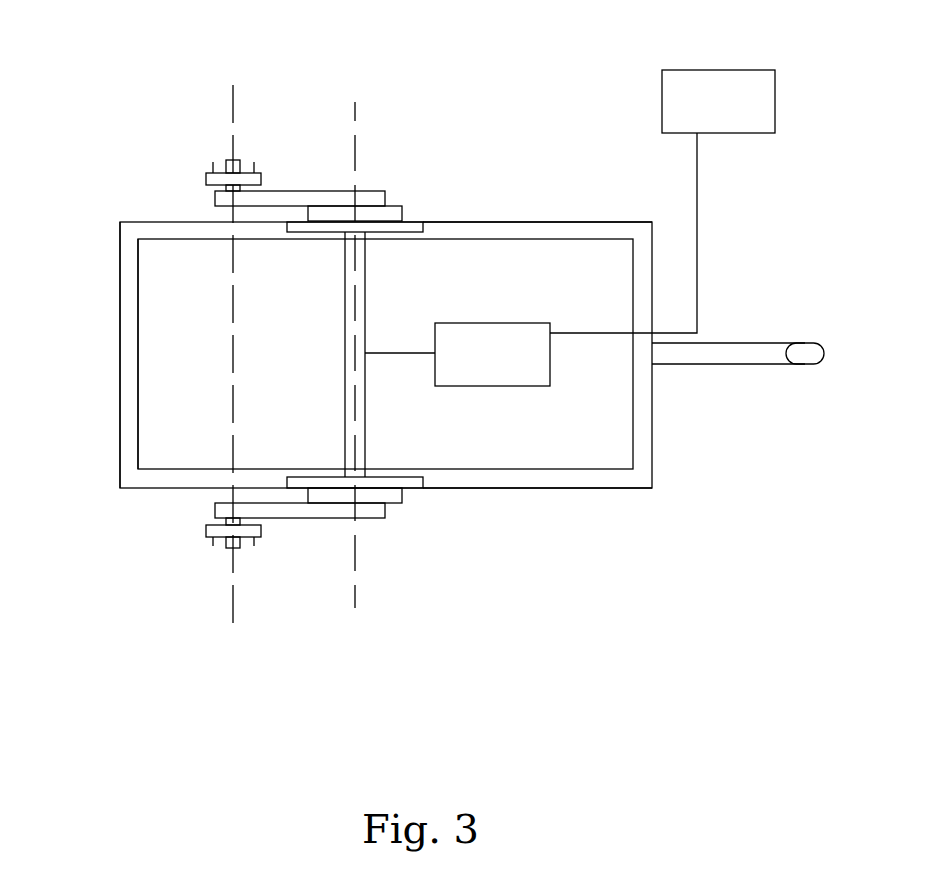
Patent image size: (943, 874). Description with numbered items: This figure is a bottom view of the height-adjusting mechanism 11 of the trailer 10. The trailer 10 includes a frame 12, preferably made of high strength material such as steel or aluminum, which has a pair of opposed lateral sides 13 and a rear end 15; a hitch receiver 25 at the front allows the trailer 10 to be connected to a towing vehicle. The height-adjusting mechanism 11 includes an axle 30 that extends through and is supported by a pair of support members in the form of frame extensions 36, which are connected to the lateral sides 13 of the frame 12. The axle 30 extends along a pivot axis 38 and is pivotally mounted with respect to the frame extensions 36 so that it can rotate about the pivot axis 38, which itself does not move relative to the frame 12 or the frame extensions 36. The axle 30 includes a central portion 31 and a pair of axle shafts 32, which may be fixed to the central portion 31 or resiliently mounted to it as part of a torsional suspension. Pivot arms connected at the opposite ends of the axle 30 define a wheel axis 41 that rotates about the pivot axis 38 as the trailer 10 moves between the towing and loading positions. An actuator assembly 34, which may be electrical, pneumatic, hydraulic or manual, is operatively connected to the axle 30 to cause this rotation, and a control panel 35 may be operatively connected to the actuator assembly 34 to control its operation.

The trailer 10 is at (77, 242).
The height-adjusting mechanism 11 is at (405, 185).
The frame 12 is at (120, 440).
The lateral sides 13 is at (578, 222).
The rear end 15 is at (128, 363).
The hitch receiver 25 is at (782, 343).
The axle 30 is at (372, 402).
The central portion 31 is at (365, 447).
The axle shafts 32 is at (180, 180).
The actuator assembly 34 is at (508, 315).
The control panel 35 is at (738, 70).
The frame extensions 36 is at (423, 226).
The pivot axis 38 is at (355, 592).
The wheel axis 41 is at (232, 608).